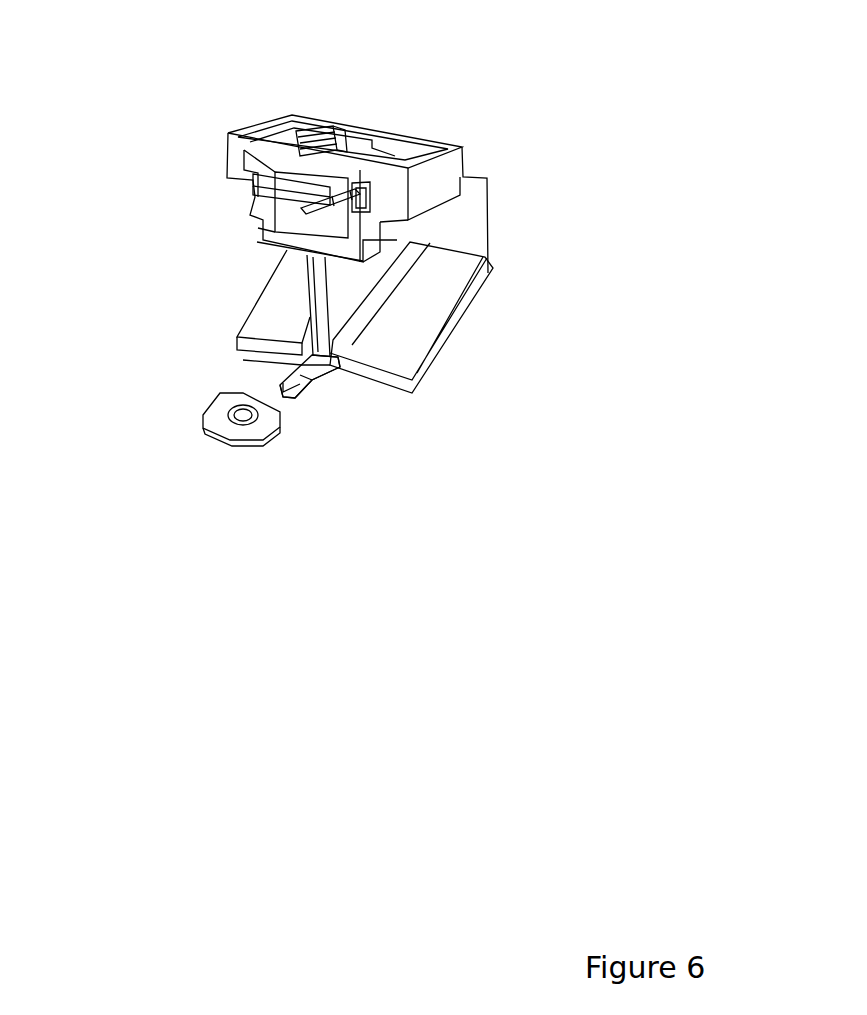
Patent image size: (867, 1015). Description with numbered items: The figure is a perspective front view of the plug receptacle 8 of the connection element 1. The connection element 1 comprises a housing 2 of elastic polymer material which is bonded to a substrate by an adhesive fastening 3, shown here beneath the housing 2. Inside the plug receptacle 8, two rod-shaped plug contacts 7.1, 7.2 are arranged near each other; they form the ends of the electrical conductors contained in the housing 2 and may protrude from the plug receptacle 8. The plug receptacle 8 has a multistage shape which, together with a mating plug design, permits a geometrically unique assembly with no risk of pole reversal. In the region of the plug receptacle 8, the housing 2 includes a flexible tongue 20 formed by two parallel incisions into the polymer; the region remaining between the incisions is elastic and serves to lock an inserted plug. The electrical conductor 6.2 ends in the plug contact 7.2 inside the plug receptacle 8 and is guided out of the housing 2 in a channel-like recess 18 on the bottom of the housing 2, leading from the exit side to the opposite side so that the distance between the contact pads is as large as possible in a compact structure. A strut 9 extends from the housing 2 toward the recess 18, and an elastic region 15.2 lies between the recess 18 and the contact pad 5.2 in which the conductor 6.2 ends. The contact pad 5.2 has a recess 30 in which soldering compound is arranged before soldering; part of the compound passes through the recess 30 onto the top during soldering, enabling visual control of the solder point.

The connection element 1 is at (190, 110).
The housing 2 is at (460, 148).
The adhesive fastening 3 is at (455, 330).
The flexible tongue 20 is at (347, 150).
The plug receptacle 8 is at (276, 187).
The plug contact 7.1 is at (322, 200).
The plug contact 7.2 is at (362, 210).
The strut 9 is at (300, 303).
The recess on the bottom of the housing 18 is at (302, 370).
The electrical conductor 6.2 is at (332, 381).
The elastic region 15.2 is at (290, 398).
The contact pad 5.2 is at (243, 431).
The recess in the contact pad 30 is at (250, 418).